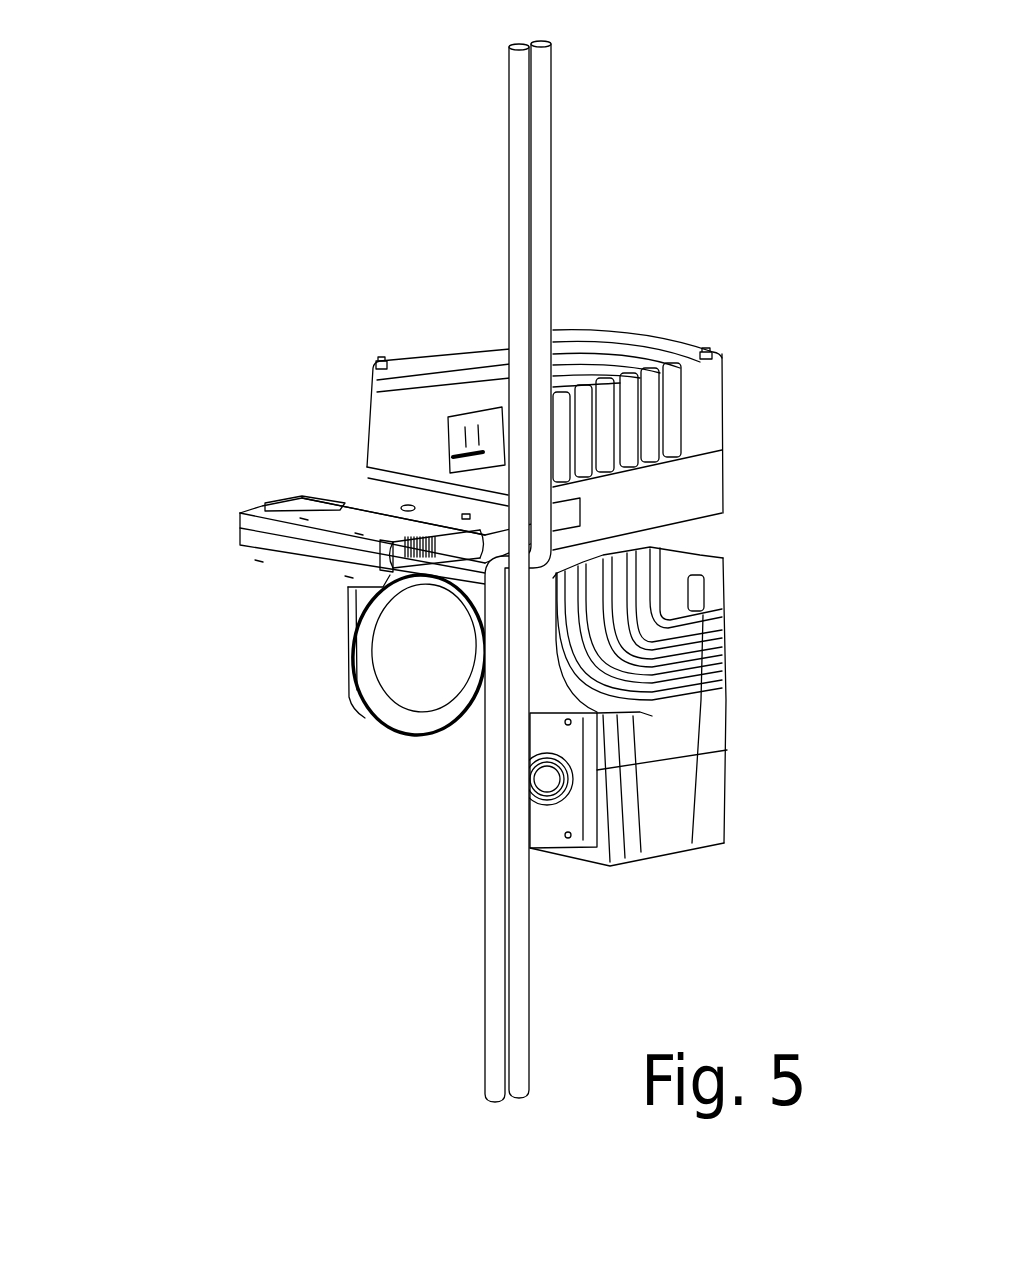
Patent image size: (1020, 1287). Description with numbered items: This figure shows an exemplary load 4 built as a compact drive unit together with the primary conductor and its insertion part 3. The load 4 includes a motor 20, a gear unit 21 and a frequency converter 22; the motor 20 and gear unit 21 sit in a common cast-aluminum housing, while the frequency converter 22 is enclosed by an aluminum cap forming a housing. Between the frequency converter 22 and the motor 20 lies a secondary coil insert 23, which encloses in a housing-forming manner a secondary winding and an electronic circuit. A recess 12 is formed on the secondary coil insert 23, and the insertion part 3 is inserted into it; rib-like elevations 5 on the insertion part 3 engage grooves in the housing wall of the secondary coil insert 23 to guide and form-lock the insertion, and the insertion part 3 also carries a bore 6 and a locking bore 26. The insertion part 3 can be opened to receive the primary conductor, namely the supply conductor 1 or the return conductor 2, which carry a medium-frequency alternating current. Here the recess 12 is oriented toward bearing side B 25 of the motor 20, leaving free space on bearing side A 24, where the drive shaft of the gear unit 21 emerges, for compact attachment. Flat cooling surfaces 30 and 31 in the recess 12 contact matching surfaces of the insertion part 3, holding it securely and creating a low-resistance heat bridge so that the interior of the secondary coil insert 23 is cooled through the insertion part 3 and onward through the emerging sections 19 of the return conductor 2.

The supply conductor 1 is at (518, 1070).
The return conductor 2 is at (493, 1028).
The insertion part 3 is at (217, 547).
The load 4 is at (405, 768).
The elevations 5 is at (350, 580).
The bore 6 is at (287, 508).
The recess 12 is at (468, 518).
The emerging section of primary conductor 19 is at (417, 560).
The motor 20 is at (602, 610).
The gear unit 21 is at (672, 803).
The frequency converter 22 is at (608, 437).
The secondary coil insert 23 is at (657, 500).
The bearing side A 24 is at (738, 655).
The bearing side B 25 is at (415, 653).
The locking bore 26 is at (415, 504).
The cooling surface 30 is at (490, 518).
The cooling surface 31 is at (432, 512).